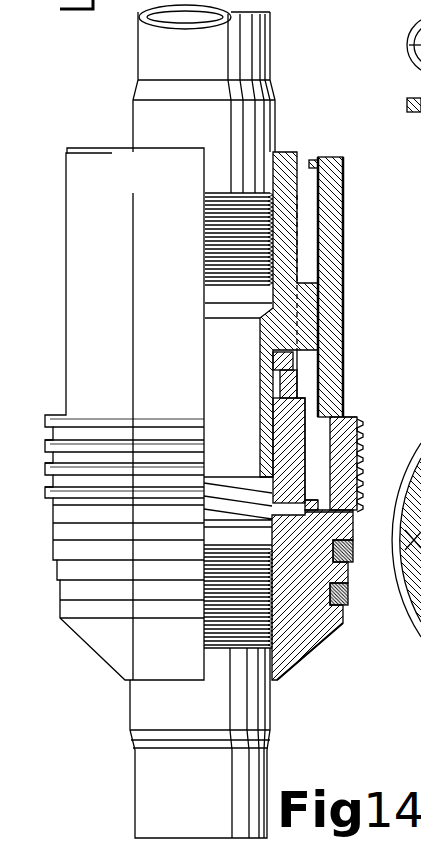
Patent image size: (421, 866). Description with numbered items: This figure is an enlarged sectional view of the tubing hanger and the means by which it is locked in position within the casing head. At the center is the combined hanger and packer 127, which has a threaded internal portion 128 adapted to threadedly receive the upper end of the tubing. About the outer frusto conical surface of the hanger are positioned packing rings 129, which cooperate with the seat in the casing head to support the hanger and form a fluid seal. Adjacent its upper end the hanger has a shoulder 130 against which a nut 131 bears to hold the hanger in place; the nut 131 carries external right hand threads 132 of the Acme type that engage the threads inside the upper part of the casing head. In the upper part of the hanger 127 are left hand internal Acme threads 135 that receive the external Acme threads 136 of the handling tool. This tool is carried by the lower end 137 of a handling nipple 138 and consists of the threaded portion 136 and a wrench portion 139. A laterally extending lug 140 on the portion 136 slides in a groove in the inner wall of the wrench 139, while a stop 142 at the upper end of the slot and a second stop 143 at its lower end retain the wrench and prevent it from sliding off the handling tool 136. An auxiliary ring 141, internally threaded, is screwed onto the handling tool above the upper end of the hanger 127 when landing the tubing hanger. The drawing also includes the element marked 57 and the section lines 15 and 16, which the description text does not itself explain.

The handling nipple 138 is at (265, 118).
The lower end of handling nipple 137 is at (273, 230).
The stop 142 is at (313, 158).
The lug 140 is at (308, 305).
The wrench portion 139 is at (337, 330).
The external Acme threads of handling tool 136 is at (280, 366).
The auxiliary ring 141 is at (290, 388).
The left hand internal Acme threads 135 is at (307, 432).
The nut 131 is at (354, 430).
The second stop 143 is at (348, 468).
The external right hand threads 132 is at (360, 493).
The shoulder 130 is at (330, 515).
The packing rings 129 is at (343, 603).
The combined hanger and packer 127 is at (310, 625).
The threaded internal portion 128 is at (290, 640).
The tubing 57 is at (270, 770).
The section line 15- 15 is at (382, 462).
The section line 16- 16 is at (377, 262).